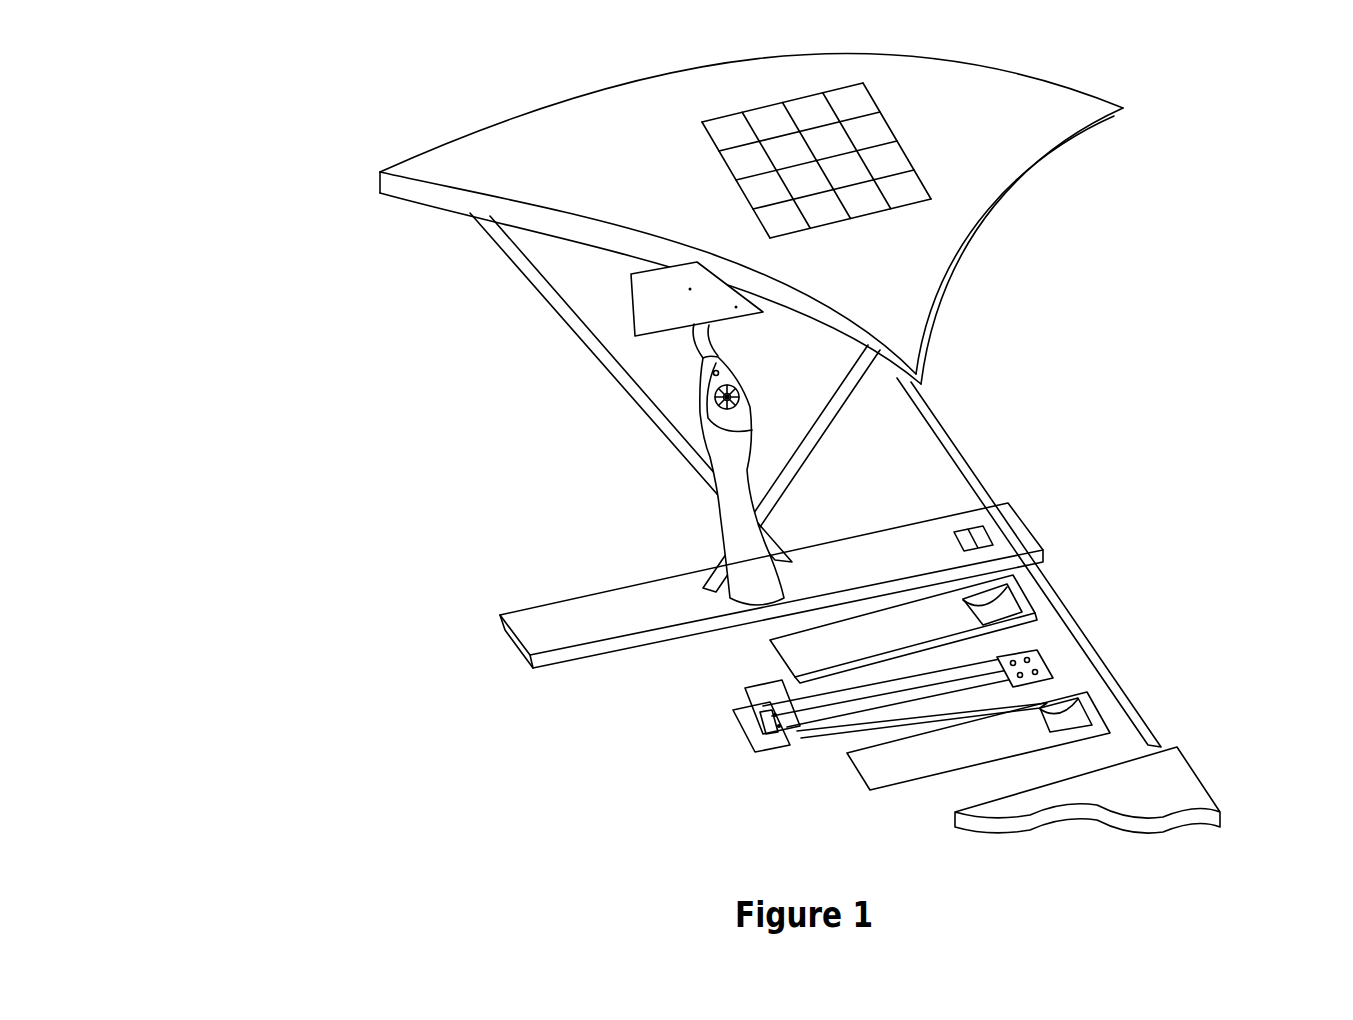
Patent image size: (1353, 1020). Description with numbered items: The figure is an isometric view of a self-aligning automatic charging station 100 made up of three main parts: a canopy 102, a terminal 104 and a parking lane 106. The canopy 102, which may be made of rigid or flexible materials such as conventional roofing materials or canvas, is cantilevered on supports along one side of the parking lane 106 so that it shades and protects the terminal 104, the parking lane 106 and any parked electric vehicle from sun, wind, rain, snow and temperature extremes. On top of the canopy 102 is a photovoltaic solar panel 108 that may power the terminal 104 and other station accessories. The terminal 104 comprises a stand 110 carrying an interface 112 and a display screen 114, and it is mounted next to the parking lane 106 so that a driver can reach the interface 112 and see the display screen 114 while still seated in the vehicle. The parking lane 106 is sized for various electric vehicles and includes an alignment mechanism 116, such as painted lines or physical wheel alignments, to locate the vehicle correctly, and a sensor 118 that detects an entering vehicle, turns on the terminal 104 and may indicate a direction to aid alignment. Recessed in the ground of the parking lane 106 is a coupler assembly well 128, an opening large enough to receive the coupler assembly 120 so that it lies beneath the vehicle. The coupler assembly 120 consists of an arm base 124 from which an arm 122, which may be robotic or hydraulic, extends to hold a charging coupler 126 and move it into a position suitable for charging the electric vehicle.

The automatic charging station 100 is at (270, 76).
The canopy 102 is at (570, 172).
The terminal 104 is at (665, 384).
The parking lane 106 is at (650, 862).
The solar panel 108 is at (840, 77).
The stand 110 is at (720, 515).
The interface 112 is at (742, 388).
The display screen 114 is at (657, 272).
The alignment mechanism 116 is at (924, 641).
The sensor 118 is at (1005, 600).
The coupler assembly 120 is at (838, 740).
The arm 122 is at (803, 705).
The arm base 124 is at (755, 693).
The charging coupler 126 is at (1032, 647).
The coupler assembly well 128 is at (750, 718).